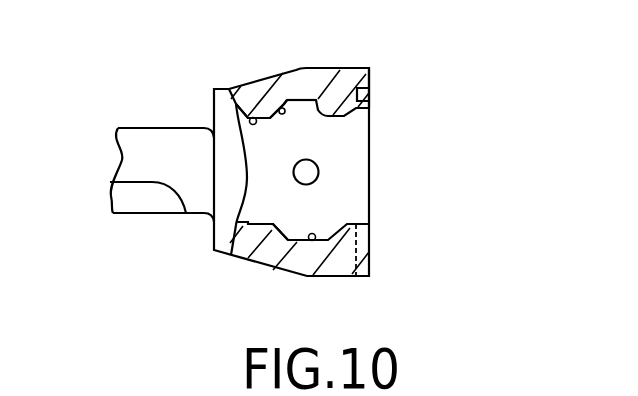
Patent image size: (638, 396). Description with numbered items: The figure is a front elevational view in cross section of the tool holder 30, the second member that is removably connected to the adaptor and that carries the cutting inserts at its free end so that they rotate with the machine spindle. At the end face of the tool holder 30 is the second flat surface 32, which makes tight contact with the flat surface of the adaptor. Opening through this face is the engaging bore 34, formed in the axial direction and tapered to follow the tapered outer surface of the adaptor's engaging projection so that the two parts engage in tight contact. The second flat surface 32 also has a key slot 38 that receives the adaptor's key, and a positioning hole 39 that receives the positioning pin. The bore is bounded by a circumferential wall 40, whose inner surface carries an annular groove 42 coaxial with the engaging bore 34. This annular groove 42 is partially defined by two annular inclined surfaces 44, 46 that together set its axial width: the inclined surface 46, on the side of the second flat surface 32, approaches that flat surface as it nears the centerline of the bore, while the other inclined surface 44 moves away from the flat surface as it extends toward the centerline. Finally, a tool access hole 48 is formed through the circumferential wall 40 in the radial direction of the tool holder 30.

The tool holder 30 is at (410, 187).
The second flat surface 32 is at (371, 77).
The engaging bore 34 is at (252, 118).
The key slot 38 is at (357, 277).
The positioning hole 39 is at (372, 88).
The circumferential wall 40 is at (269, 255).
The annular groove 42 is at (312, 240).
The annular inclined surface 44 is at (282, 108).
The annular inclined surface 46 is at (303, 98).
The tool access hole 48 is at (317, 173).